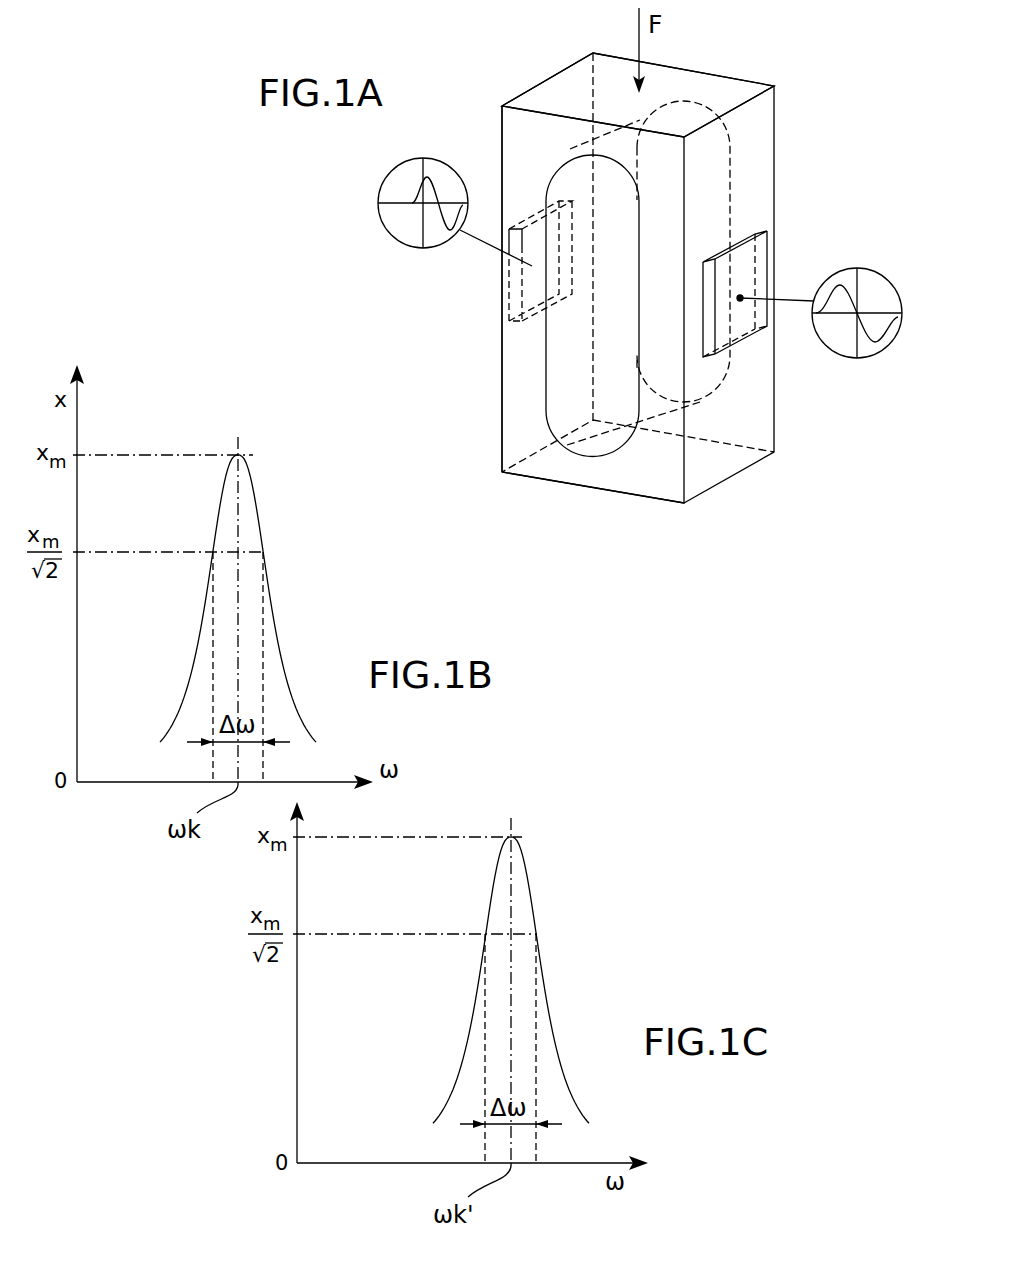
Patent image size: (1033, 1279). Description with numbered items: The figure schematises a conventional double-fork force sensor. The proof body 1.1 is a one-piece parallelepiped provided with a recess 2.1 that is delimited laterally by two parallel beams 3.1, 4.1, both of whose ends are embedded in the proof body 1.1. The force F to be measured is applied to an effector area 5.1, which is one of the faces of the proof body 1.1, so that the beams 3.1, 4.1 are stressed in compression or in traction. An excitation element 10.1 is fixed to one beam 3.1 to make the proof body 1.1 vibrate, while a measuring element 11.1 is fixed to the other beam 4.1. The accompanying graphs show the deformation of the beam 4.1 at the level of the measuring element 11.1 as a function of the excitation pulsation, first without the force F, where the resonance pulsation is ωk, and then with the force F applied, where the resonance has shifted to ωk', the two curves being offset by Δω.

The proof body 1.1 is at (683, 503).
The recess 2.1 is at (605, 430).
The beam 3.1 is at (670, 458).
The beam 4.1 is at (517, 388).
The effector area 5.1 is at (722, 86).
The excitation element 10.1 is at (750, 249).
The measuring element 11.1 is at (495, 312).